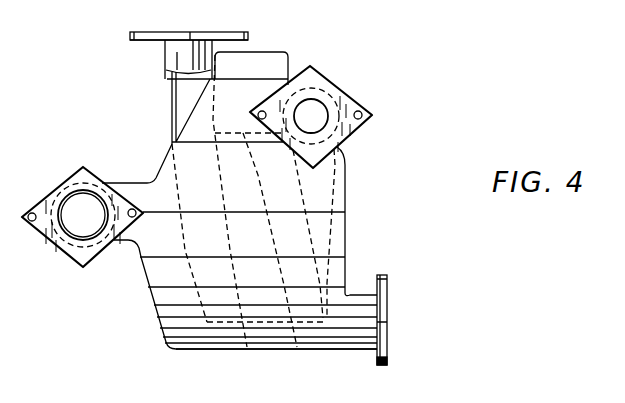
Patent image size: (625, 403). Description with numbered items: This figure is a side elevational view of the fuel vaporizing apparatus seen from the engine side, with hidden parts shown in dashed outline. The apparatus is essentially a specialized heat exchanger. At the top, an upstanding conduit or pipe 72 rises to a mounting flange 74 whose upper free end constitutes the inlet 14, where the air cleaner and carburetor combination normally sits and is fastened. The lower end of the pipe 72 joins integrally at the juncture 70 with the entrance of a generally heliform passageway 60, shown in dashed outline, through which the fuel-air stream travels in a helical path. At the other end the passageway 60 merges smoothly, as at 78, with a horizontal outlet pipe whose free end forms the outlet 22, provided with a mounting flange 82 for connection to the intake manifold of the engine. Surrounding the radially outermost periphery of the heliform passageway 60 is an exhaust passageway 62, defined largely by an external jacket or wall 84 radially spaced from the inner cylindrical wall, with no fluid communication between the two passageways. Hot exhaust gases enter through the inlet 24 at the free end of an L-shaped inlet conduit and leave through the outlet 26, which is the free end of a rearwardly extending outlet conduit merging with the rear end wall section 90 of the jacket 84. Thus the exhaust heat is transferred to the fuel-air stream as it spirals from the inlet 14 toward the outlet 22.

The inlet 14 is at (220, 29).
The mounting flange 74 is at (150, 41).
The upstanding conduit or pipe 72 is at (170, 96).
The outlet 22 is at (327, 99).
The mounting flange 82 is at (352, 108).
The inlet 24 is at (65, 252).
The juncture 70 is at (183, 237).
The rear end wall section 90 is at (150, 291).
The external jacket or wall 84 is at (205, 350).
The heliform passageway 60 is at (247, 347).
The exhaust passageway 62 is at (297, 350).
The outlet 26 is at (387, 315).
The juncture 78 is at (544, 400).